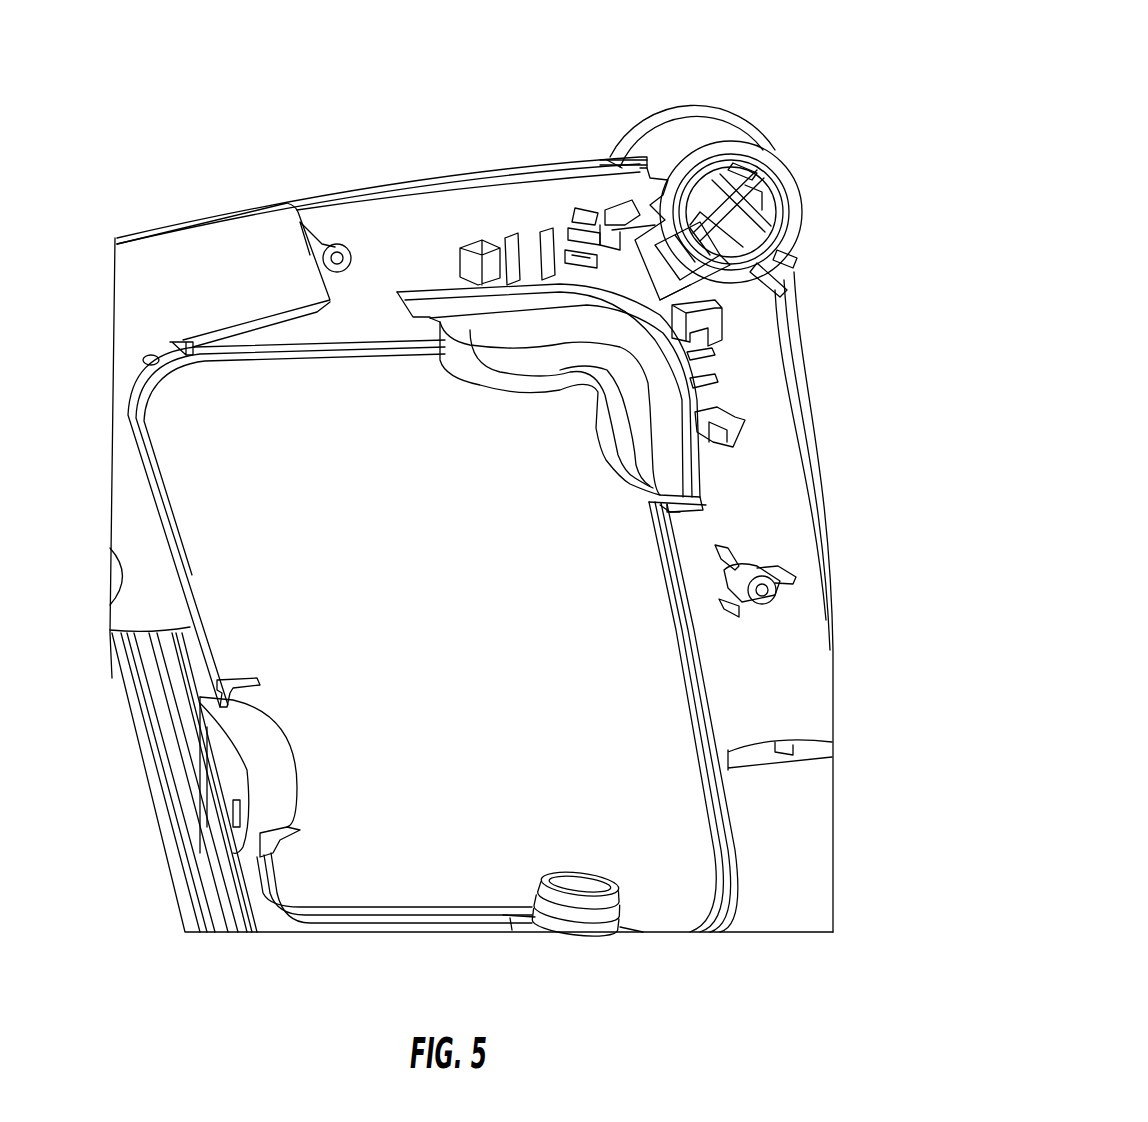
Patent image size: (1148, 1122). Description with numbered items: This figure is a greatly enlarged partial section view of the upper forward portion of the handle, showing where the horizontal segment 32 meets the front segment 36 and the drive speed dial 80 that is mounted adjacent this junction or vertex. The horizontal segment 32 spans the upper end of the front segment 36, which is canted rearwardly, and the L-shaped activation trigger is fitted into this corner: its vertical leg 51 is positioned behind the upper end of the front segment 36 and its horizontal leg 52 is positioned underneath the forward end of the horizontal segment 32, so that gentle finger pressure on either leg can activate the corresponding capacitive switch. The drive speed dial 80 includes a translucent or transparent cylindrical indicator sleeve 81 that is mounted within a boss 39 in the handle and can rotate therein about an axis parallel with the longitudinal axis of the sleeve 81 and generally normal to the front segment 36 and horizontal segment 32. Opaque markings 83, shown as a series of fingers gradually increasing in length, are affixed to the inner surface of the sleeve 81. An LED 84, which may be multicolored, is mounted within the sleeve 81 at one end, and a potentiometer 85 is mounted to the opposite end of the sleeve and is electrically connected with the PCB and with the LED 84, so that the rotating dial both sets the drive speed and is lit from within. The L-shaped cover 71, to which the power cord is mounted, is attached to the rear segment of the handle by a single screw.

The drive speed dial 80 is at (830, 83).
The cylindrical indicator sleeve 81 is at (710, 133).
The horizontal segment 32 is at (387, 178).
The horizontal leg 52 is at (523, 357).
The potentiometer 85 is at (745, 163).
The boss 39 is at (783, 175).
The opaque markings 83 is at (765, 200).
The LED 84 is at (787, 253).
The vertical leg 51 is at (650, 402).
The front segment 36 is at (830, 558).
The L-shaped cover 71 is at (203, 250).